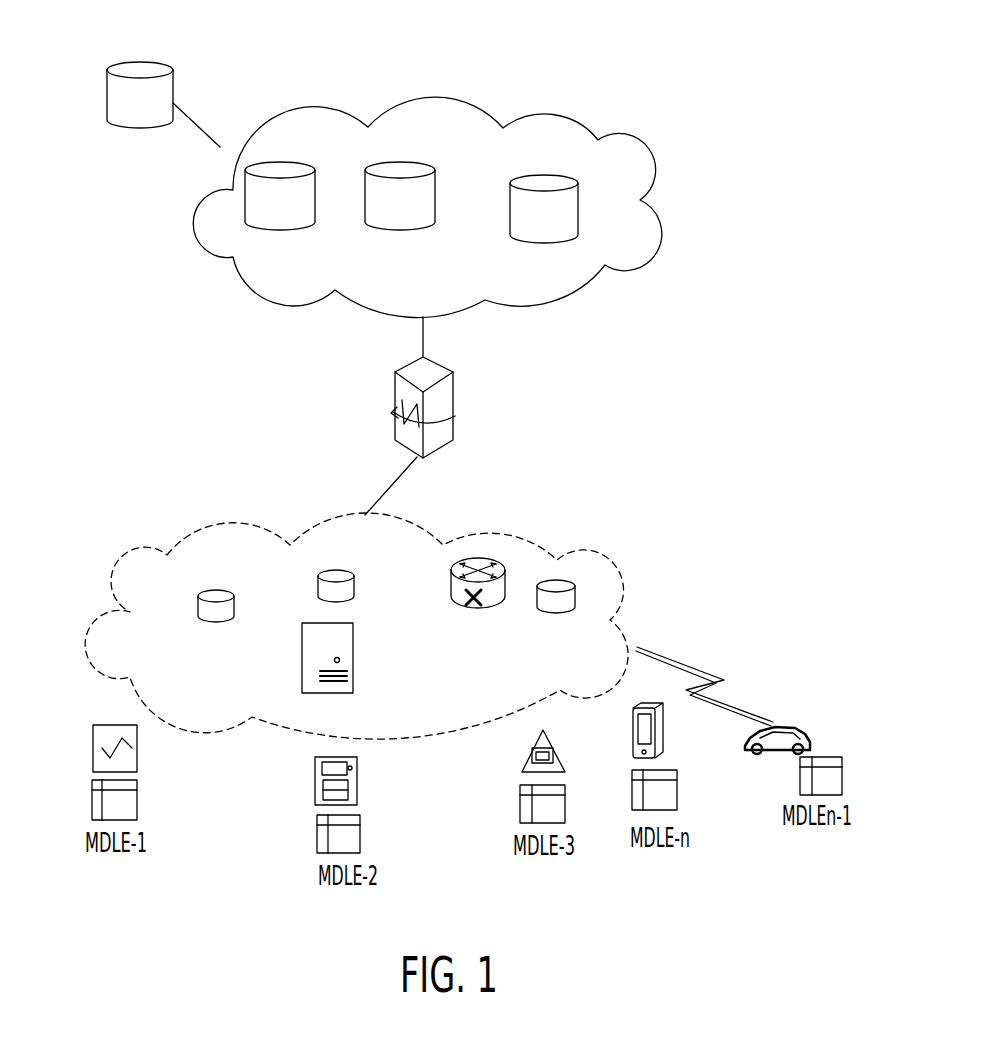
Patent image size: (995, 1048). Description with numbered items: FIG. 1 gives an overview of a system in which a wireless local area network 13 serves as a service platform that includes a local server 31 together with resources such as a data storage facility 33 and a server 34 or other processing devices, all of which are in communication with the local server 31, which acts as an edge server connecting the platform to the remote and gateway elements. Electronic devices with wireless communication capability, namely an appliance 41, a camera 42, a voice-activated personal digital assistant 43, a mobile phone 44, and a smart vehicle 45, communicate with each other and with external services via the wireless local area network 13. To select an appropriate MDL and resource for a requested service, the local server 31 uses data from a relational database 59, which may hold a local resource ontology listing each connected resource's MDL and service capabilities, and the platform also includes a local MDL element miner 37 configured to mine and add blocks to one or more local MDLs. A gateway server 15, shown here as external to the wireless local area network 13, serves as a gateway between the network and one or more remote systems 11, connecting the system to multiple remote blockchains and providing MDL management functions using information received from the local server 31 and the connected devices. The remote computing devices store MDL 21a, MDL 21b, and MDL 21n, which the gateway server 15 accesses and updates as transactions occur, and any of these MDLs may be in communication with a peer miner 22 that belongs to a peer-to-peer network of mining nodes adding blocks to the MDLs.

The remote systems 11 is at (635, 140).
The peer miner 22 is at (105, 92).
The MDL 21a is at (420, 163).
The MDL 21b is at (305, 163).
The MDL 21n is at (545, 177).
The gateway server 15 is at (394, 396).
The wireless local area network 13 is at (640, 588).
The local server 31 is at (485, 557).
The relational database 59 is at (563, 580).
The local MDL element miner 37 is at (238, 600).
The data storage facility 33 is at (358, 587).
The server 34 is at (307, 693).
The appliance 41 is at (93, 747).
The camera 42 is at (357, 787).
The voice-activated personal digital assistant 43 is at (560, 758).
The mobile phone 44 is at (662, 737).
The smart vehicle 45 is at (805, 730).